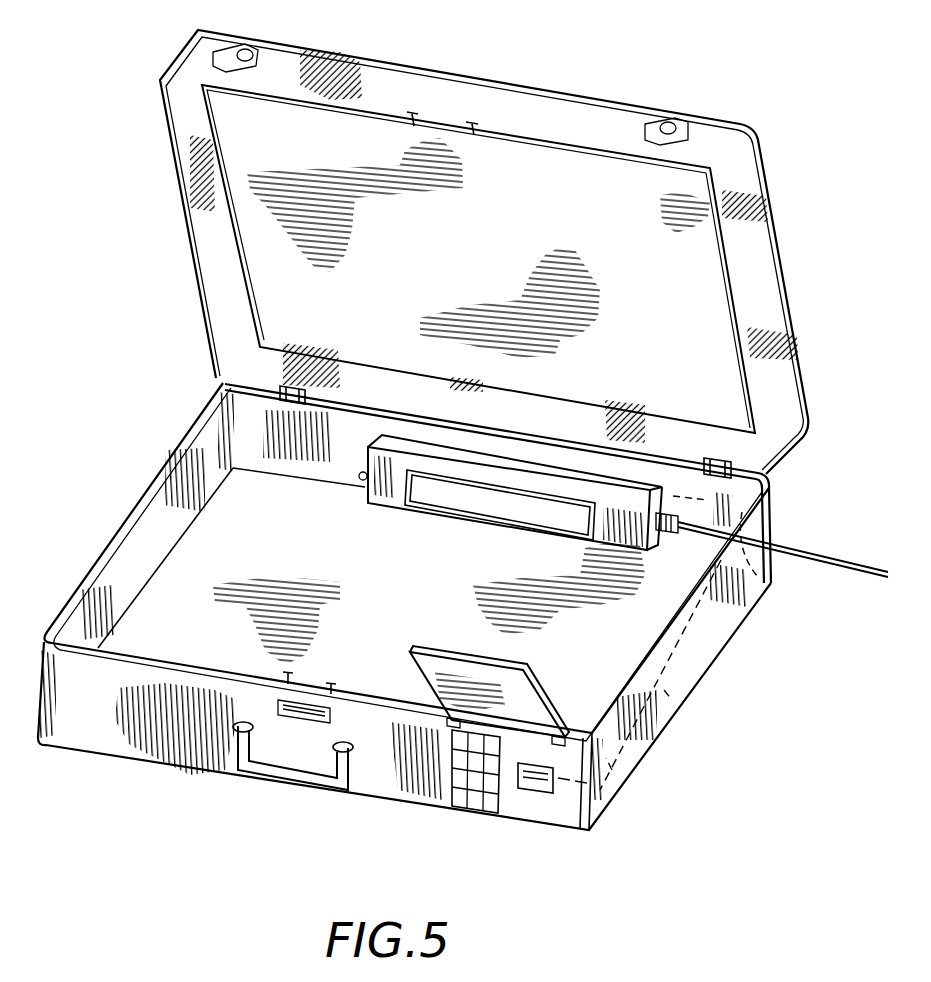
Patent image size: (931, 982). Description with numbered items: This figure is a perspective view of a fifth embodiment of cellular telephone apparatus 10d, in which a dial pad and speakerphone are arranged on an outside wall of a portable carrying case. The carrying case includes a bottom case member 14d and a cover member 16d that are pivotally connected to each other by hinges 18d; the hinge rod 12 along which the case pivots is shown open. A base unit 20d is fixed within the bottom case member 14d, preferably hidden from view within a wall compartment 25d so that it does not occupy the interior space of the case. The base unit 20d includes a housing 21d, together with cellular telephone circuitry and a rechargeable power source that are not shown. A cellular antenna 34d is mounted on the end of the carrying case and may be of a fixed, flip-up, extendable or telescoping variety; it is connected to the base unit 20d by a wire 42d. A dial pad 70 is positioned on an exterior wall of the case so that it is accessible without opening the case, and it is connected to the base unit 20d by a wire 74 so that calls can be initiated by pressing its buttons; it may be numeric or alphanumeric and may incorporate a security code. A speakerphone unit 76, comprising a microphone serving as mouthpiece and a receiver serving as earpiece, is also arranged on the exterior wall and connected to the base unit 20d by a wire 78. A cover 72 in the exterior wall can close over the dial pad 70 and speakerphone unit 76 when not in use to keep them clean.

The cellular telephone apparatus 10d is at (805, 326).
The cover member 16d is at (449, 73).
The bottom case member 14d is at (668, 700).
The hinge rim rod 12 is at (791, 484).
The hinges 18d is at (305, 393).
The wall compartment 25d is at (258, 421).
The base unit 20d is at (347, 494).
The housing 21d is at (393, 507).
The cellular antenna 34d is at (856, 575).
The wire 42d is at (768, 538).
The dial pad 70 is at (472, 806).
The cover 72 is at (410, 655).
The wire 74 is at (662, 686).
The speakerphone unit 76 is at (547, 796).
The wire 78 is at (613, 775).